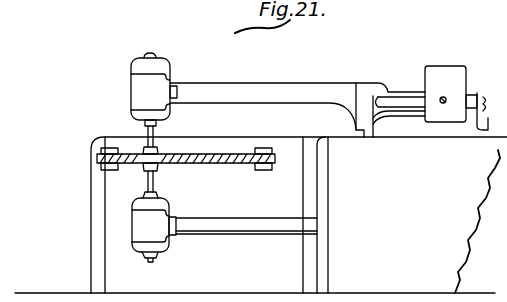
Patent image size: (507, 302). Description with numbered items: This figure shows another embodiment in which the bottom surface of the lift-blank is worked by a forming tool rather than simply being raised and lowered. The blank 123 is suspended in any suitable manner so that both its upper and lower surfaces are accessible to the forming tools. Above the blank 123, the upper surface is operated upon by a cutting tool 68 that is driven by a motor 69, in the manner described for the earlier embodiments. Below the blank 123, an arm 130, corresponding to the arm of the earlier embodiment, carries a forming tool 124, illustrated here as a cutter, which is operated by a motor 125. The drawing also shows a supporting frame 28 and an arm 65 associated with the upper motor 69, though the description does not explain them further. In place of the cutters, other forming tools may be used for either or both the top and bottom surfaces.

The frame 28 is at (91, 190).
The arm 65 is at (265, 96).
The cutting tool 68 is at (158, 149).
The motor 69 is at (140, 83).
The blank 123 is at (230, 165).
The forming tool 124 is at (156, 168).
The motor 125 is at (140, 234).
The arm 130 is at (218, 226).